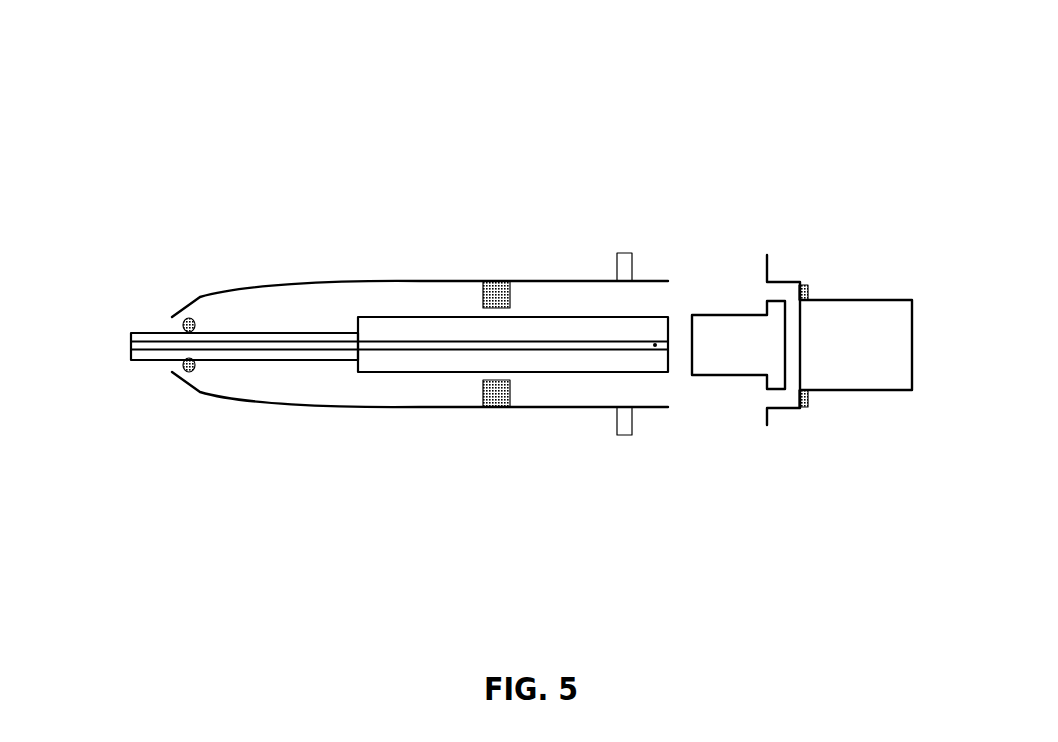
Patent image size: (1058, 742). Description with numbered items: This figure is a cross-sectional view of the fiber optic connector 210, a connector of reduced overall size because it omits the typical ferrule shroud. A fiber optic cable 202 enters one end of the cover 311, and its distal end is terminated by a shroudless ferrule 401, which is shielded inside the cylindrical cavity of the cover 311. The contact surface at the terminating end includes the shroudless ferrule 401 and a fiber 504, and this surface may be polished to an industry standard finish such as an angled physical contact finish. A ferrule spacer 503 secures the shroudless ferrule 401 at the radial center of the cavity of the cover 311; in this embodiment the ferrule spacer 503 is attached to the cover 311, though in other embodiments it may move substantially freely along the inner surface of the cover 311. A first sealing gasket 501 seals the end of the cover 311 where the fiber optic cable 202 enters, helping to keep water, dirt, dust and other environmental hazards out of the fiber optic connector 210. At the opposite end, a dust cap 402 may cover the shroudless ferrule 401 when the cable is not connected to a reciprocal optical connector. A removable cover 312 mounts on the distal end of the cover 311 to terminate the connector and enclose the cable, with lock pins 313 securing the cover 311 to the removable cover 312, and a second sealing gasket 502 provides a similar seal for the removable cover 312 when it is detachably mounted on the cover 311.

The fiber optic connector 210 is at (534, 64).
The fiber optic cable 202 is at (155, 332).
The cover 311 is at (457, 279).
The lock pins 313 is at (627, 253).
The shroudless ferrule 401 is at (668, 318).
The dust cap 402 is at (728, 315).
The removable cover 312 is at (843, 300).
The first sealing gasket 501 is at (193, 319).
The second sealing gasket 502 is at (806, 285).
The ferrule spacer 503 is at (499, 300).
The fiber 504 is at (655, 345).